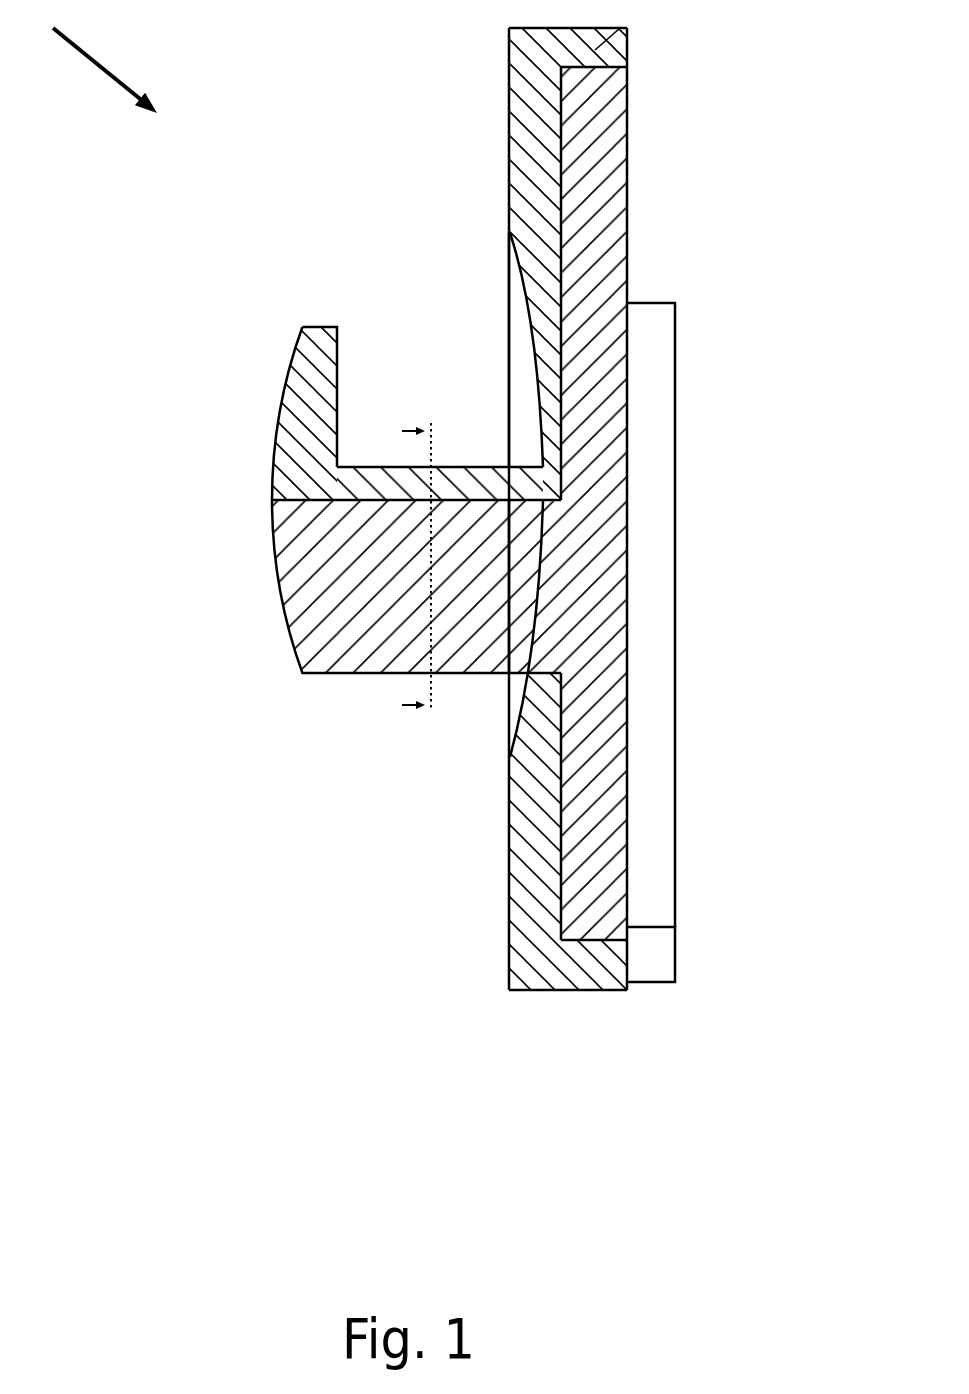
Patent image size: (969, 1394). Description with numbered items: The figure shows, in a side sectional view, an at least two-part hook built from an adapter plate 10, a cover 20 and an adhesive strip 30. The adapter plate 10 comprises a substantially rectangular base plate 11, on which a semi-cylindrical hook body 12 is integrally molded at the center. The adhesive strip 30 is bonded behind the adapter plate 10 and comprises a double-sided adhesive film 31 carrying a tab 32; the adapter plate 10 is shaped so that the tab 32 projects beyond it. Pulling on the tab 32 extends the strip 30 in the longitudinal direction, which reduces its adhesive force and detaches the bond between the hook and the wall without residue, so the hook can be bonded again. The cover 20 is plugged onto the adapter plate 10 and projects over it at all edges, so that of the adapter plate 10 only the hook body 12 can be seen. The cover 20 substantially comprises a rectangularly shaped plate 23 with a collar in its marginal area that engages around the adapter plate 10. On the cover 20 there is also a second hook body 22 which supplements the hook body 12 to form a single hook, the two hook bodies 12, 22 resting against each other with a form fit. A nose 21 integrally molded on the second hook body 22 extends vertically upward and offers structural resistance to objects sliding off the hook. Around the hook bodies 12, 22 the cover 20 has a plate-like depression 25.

The adapter plate 10 is at (675, 187).
The base plate 11 is at (612, 787).
The hook body 12 is at (343, 602).
The cover 20 is at (393, 390).
The nose 21 is at (313, 413).
The second hook body 22 is at (488, 483).
The plate 23 is at (533, 822).
The plate-like depression 25 is at (518, 395).
The adhesive strip 30 is at (702, 584).
The double-sided adhesive film 31 is at (663, 439).
The tab 32 is at (657, 958).